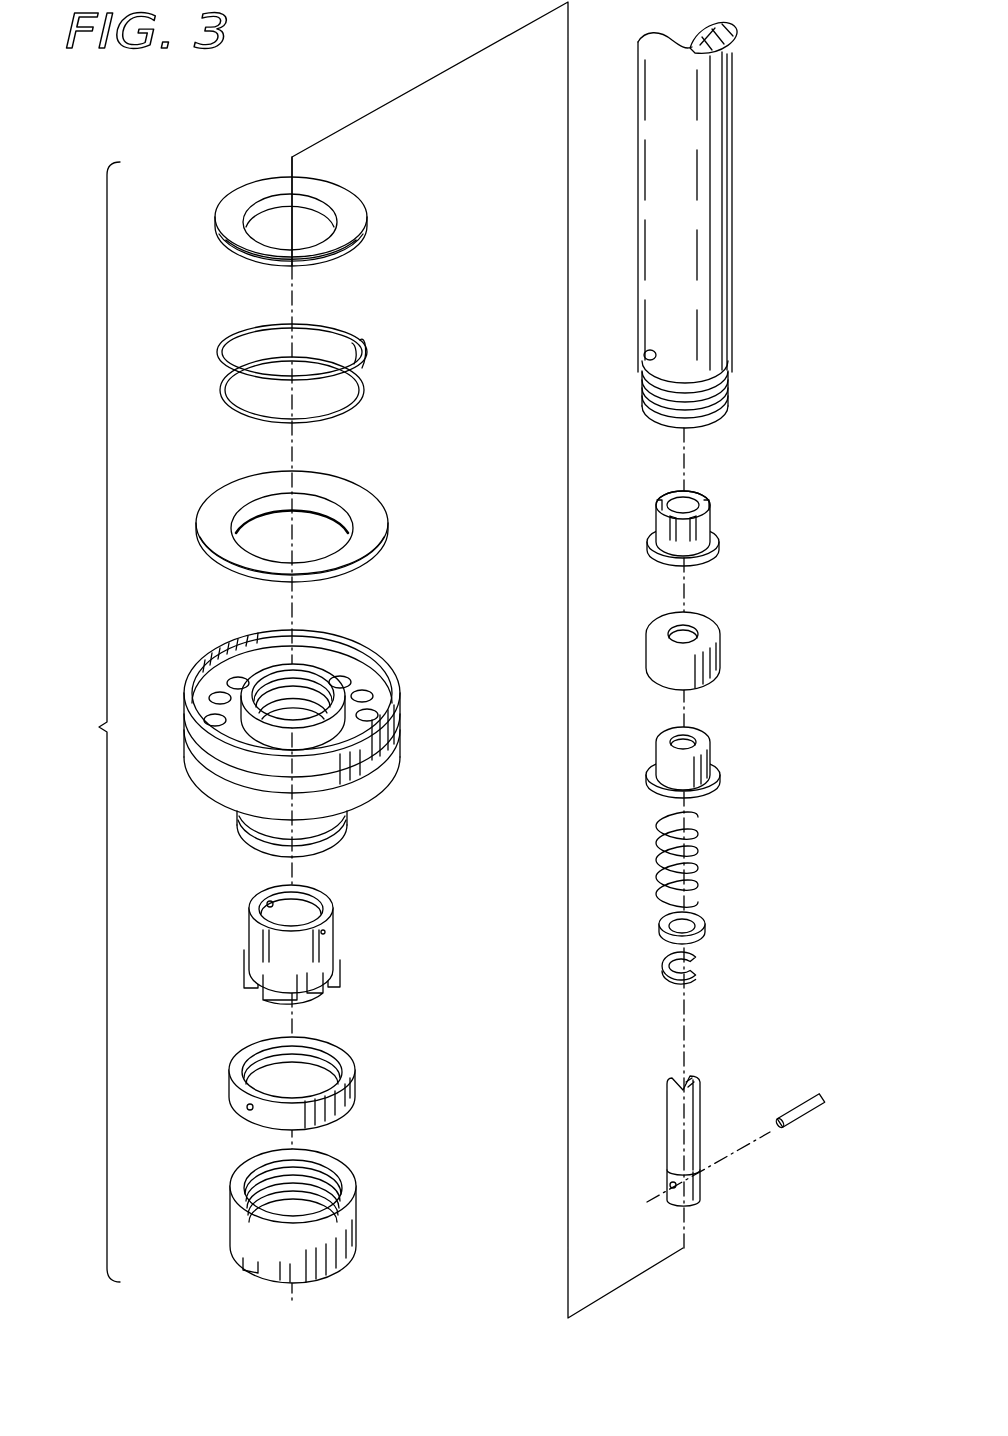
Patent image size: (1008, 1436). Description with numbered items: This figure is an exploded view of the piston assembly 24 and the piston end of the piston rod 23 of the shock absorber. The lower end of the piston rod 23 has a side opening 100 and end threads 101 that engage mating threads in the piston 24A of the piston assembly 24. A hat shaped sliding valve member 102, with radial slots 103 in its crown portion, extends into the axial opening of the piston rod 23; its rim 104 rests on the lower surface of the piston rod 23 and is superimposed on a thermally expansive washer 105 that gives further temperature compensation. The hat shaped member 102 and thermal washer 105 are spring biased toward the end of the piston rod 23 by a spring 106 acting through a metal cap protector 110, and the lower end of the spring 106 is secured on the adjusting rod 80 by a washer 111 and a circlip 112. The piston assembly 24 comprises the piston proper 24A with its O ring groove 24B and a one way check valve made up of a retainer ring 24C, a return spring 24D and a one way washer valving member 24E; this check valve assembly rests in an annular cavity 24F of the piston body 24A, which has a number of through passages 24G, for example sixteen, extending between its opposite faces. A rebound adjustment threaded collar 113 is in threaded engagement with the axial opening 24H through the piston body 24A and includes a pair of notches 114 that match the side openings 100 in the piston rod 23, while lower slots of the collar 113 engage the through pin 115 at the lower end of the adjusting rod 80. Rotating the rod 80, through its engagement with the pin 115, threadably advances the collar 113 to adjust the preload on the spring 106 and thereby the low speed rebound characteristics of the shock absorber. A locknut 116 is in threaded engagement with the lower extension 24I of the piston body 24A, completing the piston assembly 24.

The piston rod 23 is at (708, 236).
The piston assembly 24 is at (77, 722).
The piston 24A is at (334, 716).
The O ring groove 24B is at (385, 782).
The retainer ring 24C is at (352, 220).
The return spring 24D is at (362, 340).
The one way washer valving member 24E is at (357, 507).
The annular cavity 24F is at (330, 650).
The through passages 24G is at (368, 700).
The axial opening 24H is at (283, 690).
The lower extension 24I is at (338, 847).
The adjusting rod 80 is at (693, 1107).
The side opening 100 is at (645, 358).
The end threads 101 is at (722, 402).
The hat shaped sliding valve member 102 is at (734, 509).
The radial slots 103 is at (702, 506).
The rim 104 is at (720, 547).
The thermally expansive washer 105 is at (720, 650).
The spring 106 is at (700, 862).
The metal cap protector 110 is at (711, 760).
The washer 111 is at (703, 928).
The circlip 112 is at (699, 974).
The rebound adjustment threaded collar 113 is at (283, 941).
The notches 114 is at (333, 924).
The pin 115 is at (808, 1115).
The locknut 116 is at (312, 1060).